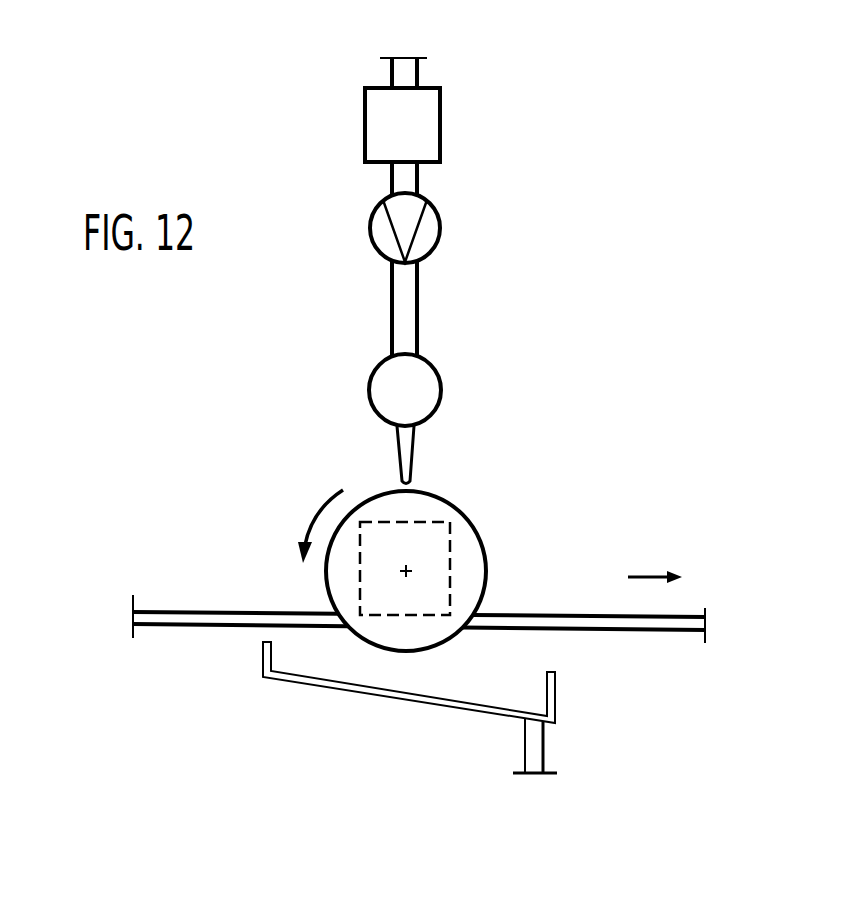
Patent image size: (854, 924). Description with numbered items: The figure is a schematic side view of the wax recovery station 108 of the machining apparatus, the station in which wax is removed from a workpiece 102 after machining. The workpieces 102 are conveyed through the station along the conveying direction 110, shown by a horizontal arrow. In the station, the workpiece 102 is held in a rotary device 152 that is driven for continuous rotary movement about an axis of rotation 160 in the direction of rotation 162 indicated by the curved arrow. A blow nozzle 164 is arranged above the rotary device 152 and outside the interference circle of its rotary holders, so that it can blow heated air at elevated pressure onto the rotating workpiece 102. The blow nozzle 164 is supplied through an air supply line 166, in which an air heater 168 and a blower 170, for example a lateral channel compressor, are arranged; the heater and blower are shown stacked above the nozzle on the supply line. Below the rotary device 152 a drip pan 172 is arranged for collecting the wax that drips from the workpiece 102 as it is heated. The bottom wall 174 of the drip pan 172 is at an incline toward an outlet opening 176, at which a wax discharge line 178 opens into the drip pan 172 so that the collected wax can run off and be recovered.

The workpiece 102 is at (495, 547).
The wax recovery station 108 is at (367, 365).
The conveying direction 110 is at (652, 576).
The rotary device 152 is at (487, 580).
The axis of rotation 160 is at (404, 571).
The direction of rotation 162 is at (312, 533).
The blow nozzle 164 is at (410, 450).
The air supply line 166 is at (407, 328).
The air heater 168 is at (420, 135).
The blower 170 is at (430, 237).
The drip pan 172 is at (557, 682).
The bottom wall 174 is at (325, 682).
The outlet opening 176 is at (523, 727).
The wax discharge line 178 is at (545, 755).